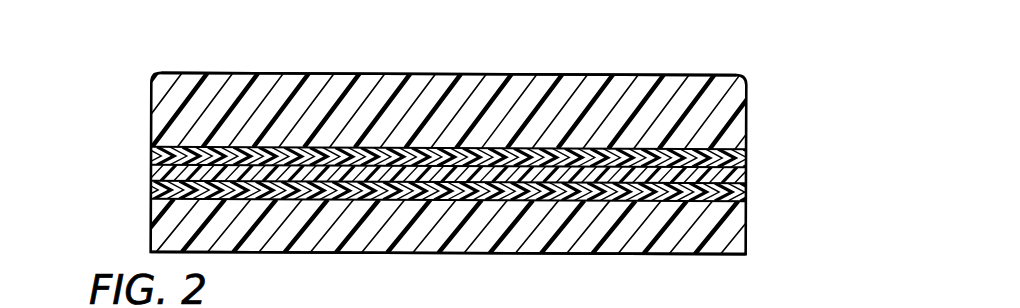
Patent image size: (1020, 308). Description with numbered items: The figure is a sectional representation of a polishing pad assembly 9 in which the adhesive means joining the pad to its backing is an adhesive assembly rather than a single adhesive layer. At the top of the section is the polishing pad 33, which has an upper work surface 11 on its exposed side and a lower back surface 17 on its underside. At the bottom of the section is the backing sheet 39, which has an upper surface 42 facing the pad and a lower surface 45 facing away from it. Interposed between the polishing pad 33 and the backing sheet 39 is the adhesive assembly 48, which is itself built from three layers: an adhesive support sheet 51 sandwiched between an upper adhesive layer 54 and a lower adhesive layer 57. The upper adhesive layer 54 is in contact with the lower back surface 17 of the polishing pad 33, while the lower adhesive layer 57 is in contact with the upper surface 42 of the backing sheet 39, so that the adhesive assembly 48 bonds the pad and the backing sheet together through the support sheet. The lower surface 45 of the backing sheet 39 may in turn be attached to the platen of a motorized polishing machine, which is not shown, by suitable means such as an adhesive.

The polishing pad assembly 9 is at (110, 83).
The upper work surface 11 is at (500, 74).
The polishing pad 33 is at (436, 85).
The lower back surface 17 is at (640, 157).
The upper adhesive layer 54 is at (151, 158).
The adhesive support sheet 51 is at (152, 174).
The lower adhesive layer 57 is at (151, 189).
The adhesive assembly 48 is at (752, 150).
The upper surface 42 is at (693, 190).
The backing sheet 39 is at (517, 244).
The lower surface 45 is at (578, 256).